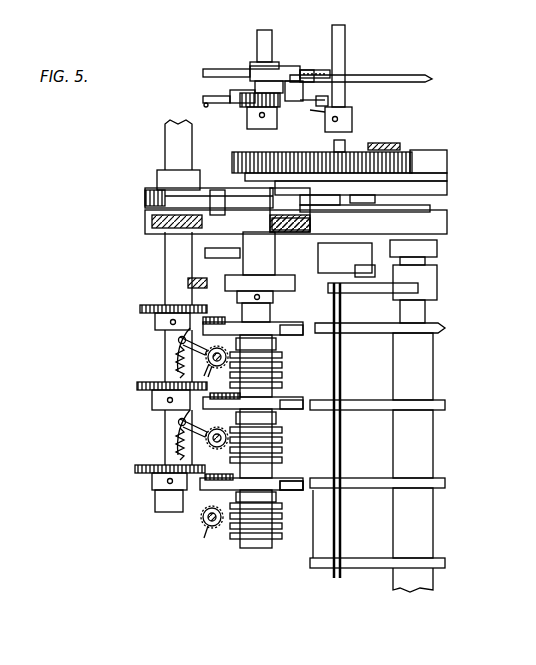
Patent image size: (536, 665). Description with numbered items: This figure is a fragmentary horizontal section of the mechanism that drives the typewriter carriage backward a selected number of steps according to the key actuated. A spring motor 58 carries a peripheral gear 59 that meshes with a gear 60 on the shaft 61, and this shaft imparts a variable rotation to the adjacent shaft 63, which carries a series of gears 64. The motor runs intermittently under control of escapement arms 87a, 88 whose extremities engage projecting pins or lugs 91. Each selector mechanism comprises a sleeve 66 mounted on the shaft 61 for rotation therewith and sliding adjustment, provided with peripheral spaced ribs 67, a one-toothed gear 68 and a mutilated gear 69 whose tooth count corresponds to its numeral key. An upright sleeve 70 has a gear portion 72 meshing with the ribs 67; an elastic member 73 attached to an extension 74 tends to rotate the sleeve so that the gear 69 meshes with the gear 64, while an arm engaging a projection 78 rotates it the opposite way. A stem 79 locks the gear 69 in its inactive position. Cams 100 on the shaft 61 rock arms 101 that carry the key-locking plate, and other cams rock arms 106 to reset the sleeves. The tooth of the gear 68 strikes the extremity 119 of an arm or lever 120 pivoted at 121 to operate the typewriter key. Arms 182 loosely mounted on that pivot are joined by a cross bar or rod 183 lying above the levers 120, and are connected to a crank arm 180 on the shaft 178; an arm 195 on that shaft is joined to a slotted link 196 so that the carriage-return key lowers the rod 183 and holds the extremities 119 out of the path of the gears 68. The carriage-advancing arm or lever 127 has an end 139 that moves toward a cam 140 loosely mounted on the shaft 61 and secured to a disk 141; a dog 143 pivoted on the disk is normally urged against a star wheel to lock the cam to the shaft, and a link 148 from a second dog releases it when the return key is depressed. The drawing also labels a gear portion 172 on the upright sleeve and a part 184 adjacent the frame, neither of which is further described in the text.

The cam 140 is at (240, 68).
The disk 141 is at (213, 87).
The link 148 is at (204, 99).
The gear portion 172 is at (249, 112).
The shaft 178 is at (341, 28).
The dog 143 is at (305, 108).
The end of arm or lever 139 is at (320, 72).
The arm or lever 127 is at (420, 75).
The link 196 is at (326, 100).
The arm 195 is at (326, 113).
The escapement arm 88 is at (385, 143).
The pins or lugs 91 is at (342, 151).
The gear 60 is at (240, 155).
The gear 59 is at (447, 160).
The escapement arm 87a is at (346, 182).
The motor 58 is at (447, 192).
The shaft 63 is at (165, 148).
The crank arm 180 is at (318, 252).
The block 184 is at (393, 280).
The shaft 61 is at (273, 310).
The arms 106 is at (205, 253).
The arms 101 is at (190, 280).
The cams 100 is at (295, 287).
The mutilated gear 69 is at (303, 328).
The sleeve 66 is at (282, 352).
The peripheral spaced ribs 67 is at (282, 365).
The one-toothed gear 68 is at (303, 405).
The stem 79 is at (221, 348).
The gear portion 72 is at (217, 380).
The upright sleeve 70 is at (207, 527).
The extension 74 is at (178, 340).
The elastic member 73 is at (176, 358).
The gears 64 is at (140, 310).
The projection 78 is at (200, 376).
The cross bar or rod 183 is at (341, 441).
The arms 182 is at (388, 291).
The pivot 121 is at (442, 323).
The arm or lever 120 is at (366, 400).
The extremity 119 is at (314, 500).